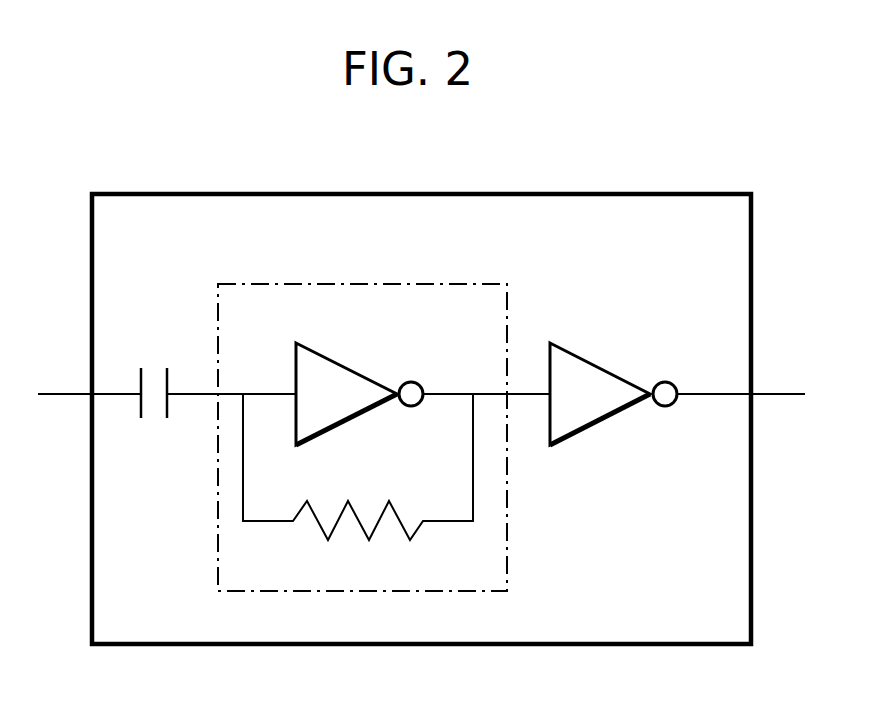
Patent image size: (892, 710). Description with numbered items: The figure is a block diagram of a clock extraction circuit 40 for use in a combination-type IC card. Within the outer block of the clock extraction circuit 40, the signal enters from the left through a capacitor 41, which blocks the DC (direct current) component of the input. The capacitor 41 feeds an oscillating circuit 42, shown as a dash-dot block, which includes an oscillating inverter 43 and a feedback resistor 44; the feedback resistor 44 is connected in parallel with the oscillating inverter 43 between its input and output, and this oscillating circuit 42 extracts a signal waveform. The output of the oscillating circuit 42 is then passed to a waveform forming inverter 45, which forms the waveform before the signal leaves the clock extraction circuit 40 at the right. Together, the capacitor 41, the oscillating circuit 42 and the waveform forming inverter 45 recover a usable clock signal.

The clock extraction circuit 40 is at (406, 192).
The capacitor 41 is at (167, 380).
The oscillating circuit 42 is at (406, 282).
The oscillating inverter 43 is at (336, 360).
The feedback resistor 44 is at (356, 512).
The waveform forming inverter 45 is at (593, 360).